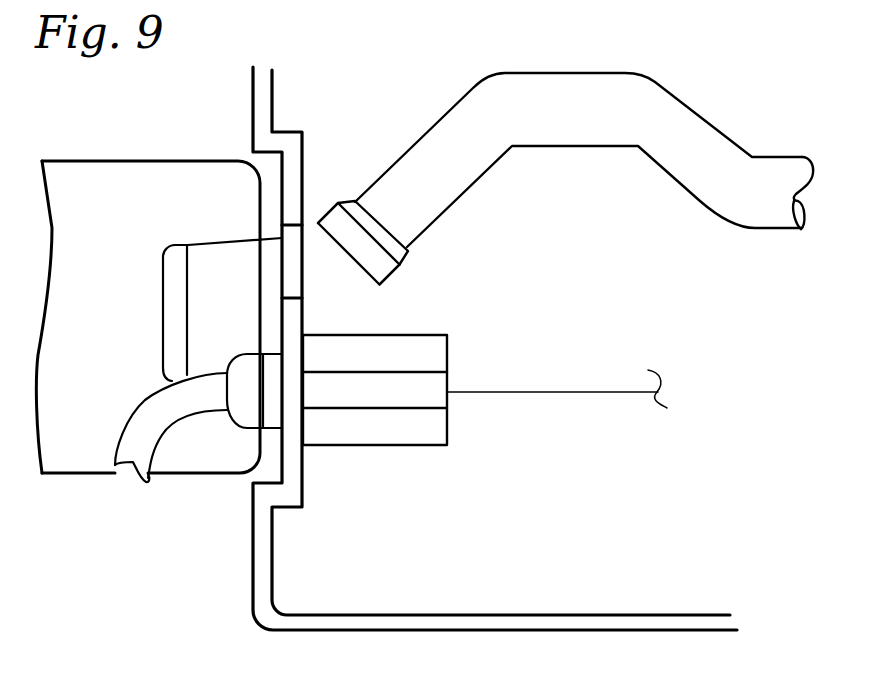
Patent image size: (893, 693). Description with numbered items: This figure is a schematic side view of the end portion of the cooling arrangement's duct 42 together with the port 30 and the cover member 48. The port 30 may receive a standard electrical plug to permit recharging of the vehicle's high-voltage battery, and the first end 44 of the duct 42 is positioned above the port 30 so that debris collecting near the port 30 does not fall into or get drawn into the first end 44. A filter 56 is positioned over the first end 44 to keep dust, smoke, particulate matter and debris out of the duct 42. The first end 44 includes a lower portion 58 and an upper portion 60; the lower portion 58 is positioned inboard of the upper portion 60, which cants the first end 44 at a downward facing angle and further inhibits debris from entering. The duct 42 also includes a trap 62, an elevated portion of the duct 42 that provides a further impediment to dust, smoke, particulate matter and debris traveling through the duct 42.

The port 30 is at (383, 446).
The duct 42 is at (714, 115).
The first end 44 is at (366, 251).
The cover member 48 is at (160, 170).
The filter 56 is at (398, 245).
The lower portion 58 is at (382, 284).
The upper portion 60 is at (318, 223).
The trap 62 is at (527, 86).